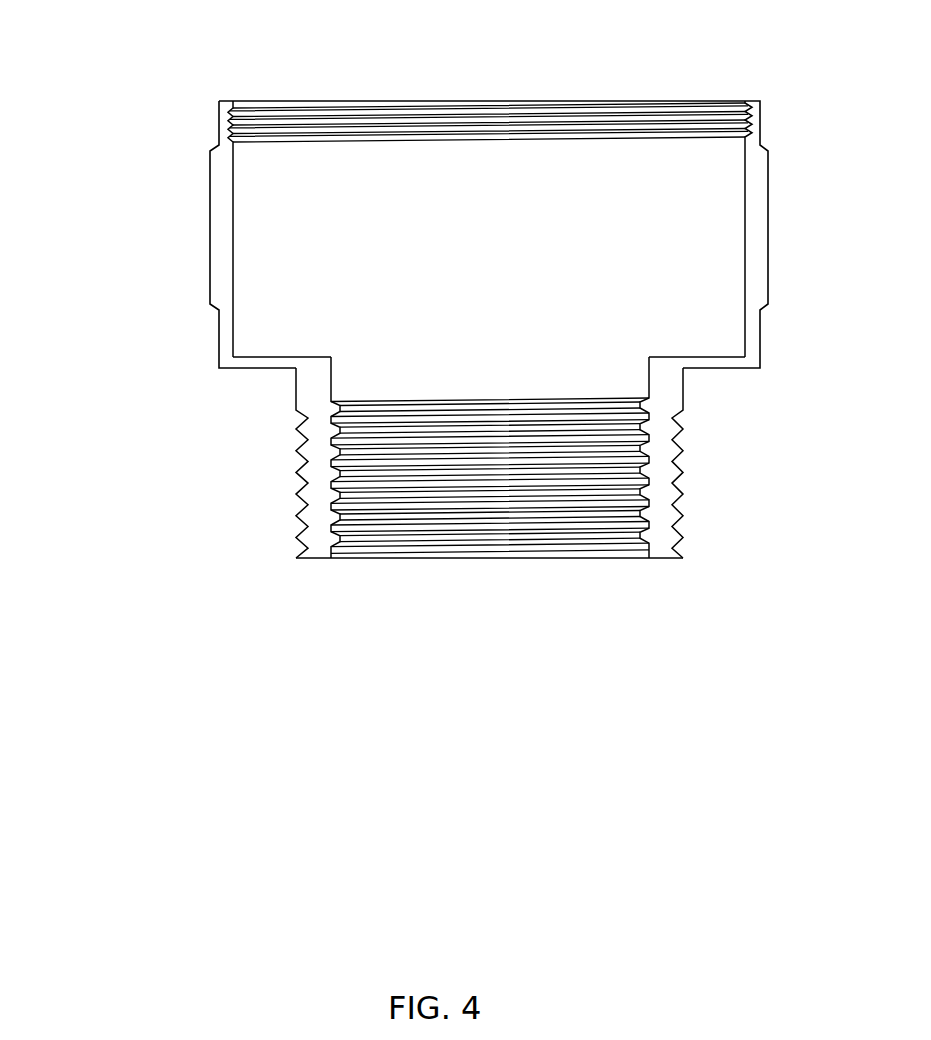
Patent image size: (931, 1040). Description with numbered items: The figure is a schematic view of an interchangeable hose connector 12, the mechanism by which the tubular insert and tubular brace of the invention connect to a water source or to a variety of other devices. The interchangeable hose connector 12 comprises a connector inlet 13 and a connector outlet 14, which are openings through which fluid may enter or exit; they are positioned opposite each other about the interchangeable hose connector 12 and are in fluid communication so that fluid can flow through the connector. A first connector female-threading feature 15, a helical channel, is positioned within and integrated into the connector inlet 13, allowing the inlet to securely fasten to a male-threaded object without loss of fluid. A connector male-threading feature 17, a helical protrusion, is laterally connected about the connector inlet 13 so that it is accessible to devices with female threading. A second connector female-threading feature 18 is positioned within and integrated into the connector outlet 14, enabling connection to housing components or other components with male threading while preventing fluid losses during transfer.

The interchangeable hose connector 12 is at (439, 336).
The connector inlet 13 is at (557, 506).
The connector outlet 14 is at (494, 192).
The first connector female-threading feature 15 is at (577, 547).
The connector male-threading feature 17 is at (677, 486).
The second connector female-threading feature 18 is at (665, 107).